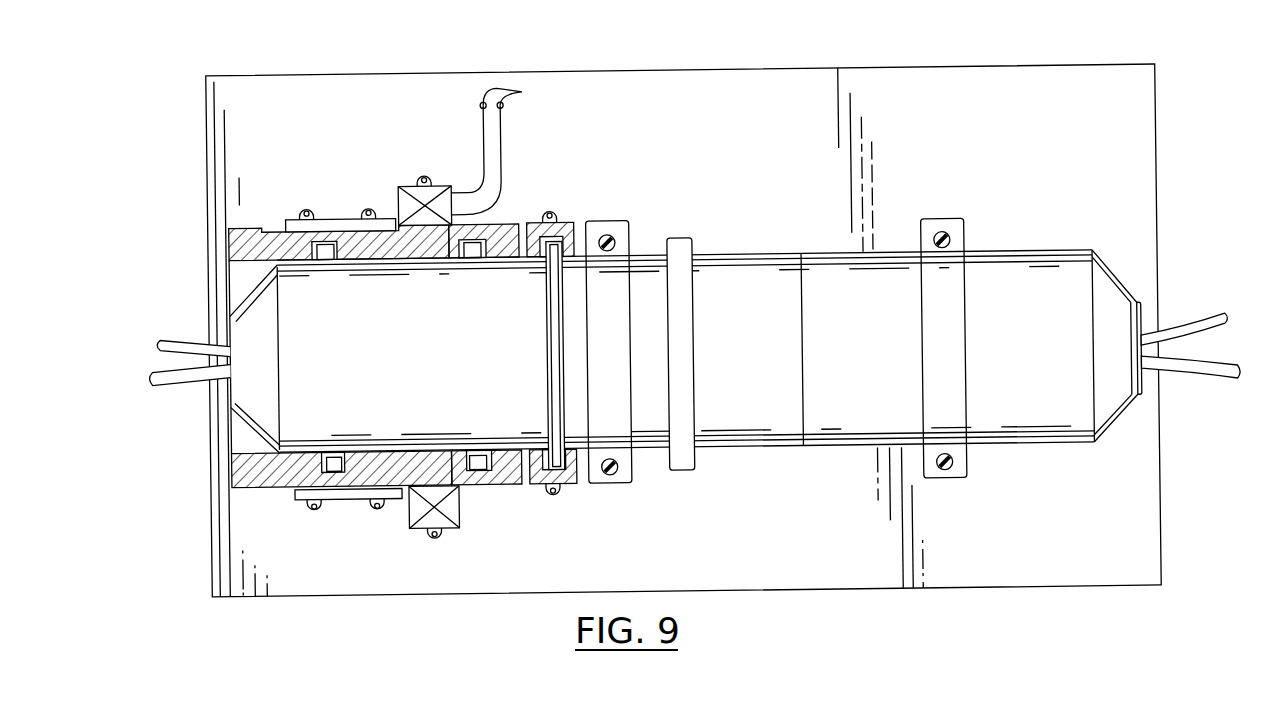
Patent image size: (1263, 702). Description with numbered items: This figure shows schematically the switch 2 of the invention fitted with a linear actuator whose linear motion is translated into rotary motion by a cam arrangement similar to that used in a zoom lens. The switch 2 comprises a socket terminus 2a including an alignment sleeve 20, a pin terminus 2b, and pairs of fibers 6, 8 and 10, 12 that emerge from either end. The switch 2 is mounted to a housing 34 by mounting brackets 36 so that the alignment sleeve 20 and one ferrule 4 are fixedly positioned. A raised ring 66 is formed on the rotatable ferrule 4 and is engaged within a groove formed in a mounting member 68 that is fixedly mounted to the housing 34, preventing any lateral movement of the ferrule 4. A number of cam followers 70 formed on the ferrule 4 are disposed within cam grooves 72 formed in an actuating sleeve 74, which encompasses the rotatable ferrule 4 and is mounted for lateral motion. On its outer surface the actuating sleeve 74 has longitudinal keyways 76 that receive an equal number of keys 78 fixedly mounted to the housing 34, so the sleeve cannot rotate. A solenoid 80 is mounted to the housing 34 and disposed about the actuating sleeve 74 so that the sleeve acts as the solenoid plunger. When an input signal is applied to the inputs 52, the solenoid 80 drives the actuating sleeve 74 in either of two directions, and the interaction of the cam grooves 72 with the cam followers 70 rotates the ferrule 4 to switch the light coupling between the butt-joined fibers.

The switch 2 is at (770, 227).
The socket terminus 2a is at (826, 470).
The pin terminus 2b is at (228, 419).
The ferrule 4 is at (384, 369).
The fiber 6 is at (172, 334).
The fiber 8 is at (185, 374).
The fiber 10 is at (1215, 317).
The fiber 12 is at (1205, 385).
The alignment sleeve 20 is at (745, 453).
The housing 34 is at (956, 70).
The mounting brackets 36 is at (625, 484).
The inputs 52 is at (525, 90).
The raised ring 66 is at (543, 361).
The mounting member 68 is at (574, 221).
The cam followers 70 is at (333, 258).
The cam grooves 72 is at (326, 257).
The actuating sleeve 74 is at (505, 222).
The longitudinal keyways 76 is at (276, 223).
The keys 78 is at (340, 215).
The solenoid 80 is at (402, 182).